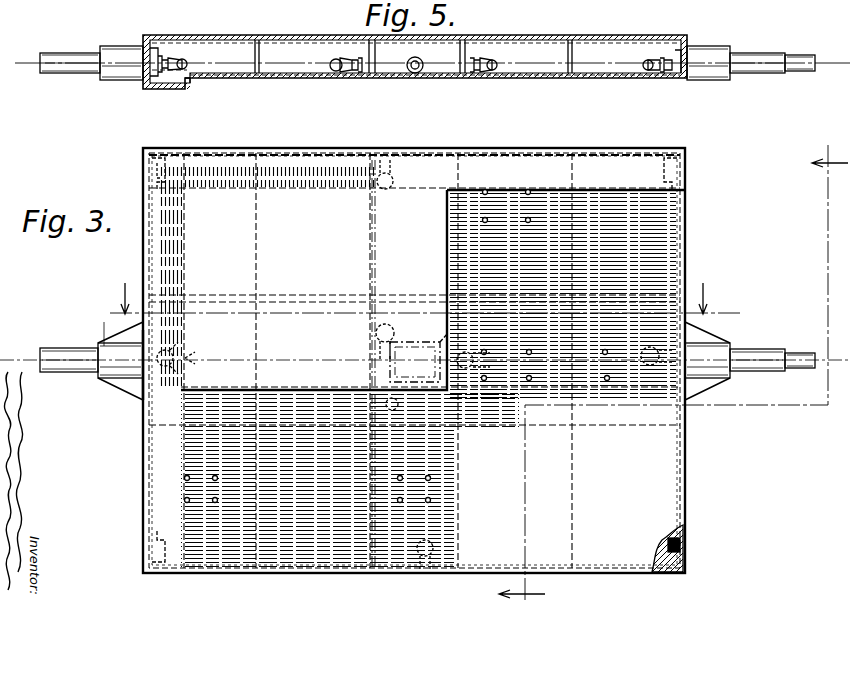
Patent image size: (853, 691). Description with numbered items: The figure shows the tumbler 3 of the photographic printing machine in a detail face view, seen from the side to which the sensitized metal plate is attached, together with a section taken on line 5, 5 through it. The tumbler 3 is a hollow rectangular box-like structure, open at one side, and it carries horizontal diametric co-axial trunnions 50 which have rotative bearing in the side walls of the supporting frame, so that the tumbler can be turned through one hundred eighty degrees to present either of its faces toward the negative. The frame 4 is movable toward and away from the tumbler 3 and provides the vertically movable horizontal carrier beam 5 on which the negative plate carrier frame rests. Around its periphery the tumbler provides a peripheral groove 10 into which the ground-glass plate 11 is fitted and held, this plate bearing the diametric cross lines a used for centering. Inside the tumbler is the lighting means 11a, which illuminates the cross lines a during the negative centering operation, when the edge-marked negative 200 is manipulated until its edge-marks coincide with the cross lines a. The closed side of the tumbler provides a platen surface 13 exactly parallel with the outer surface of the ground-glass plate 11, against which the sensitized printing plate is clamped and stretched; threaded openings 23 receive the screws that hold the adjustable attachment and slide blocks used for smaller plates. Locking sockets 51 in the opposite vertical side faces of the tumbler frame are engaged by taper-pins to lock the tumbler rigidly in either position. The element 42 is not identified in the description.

In FIG. 5, the tumbler 3 is at (612, 78).
In FIG. 3, the tumbler 3 is at (538, 152).
In FIG. 3, the frame 4 is at (673, 375).
In FIG. 3, the carrier beam 5 is at (423, 303).
In FIG. 5, the peripheral groove 10 is at (688, 42).
In FIG. 5, the ground-glass plate 11 is at (591, 38).
In FIG. 5, the lighting means 11a is at (180, 60).
In FIG. 3, the lighting means 11a is at (410, 172).
In FIG. 5, the platen surface 13 is at (224, 87).
In FIG. 3, the platen surface 13 is at (414, 360).
In FIG. 3, the threaded openings 23 is at (526, 219).
In FIG. 5, the end plate 42 is at (150, 86).
In FIG. 3, the end plate 42 is at (266, 154).
In FIG. 5, the trunnions 50 is at (88, 55).
In FIG. 3, the trunnions 50 is at (80, 372).
In FIG. 3, the locking sockets 51 is at (150, 172).
In FIG. 3, the negative 200 is at (478, 300).
In FIG. 3, the cross lines a is at (414, 240).